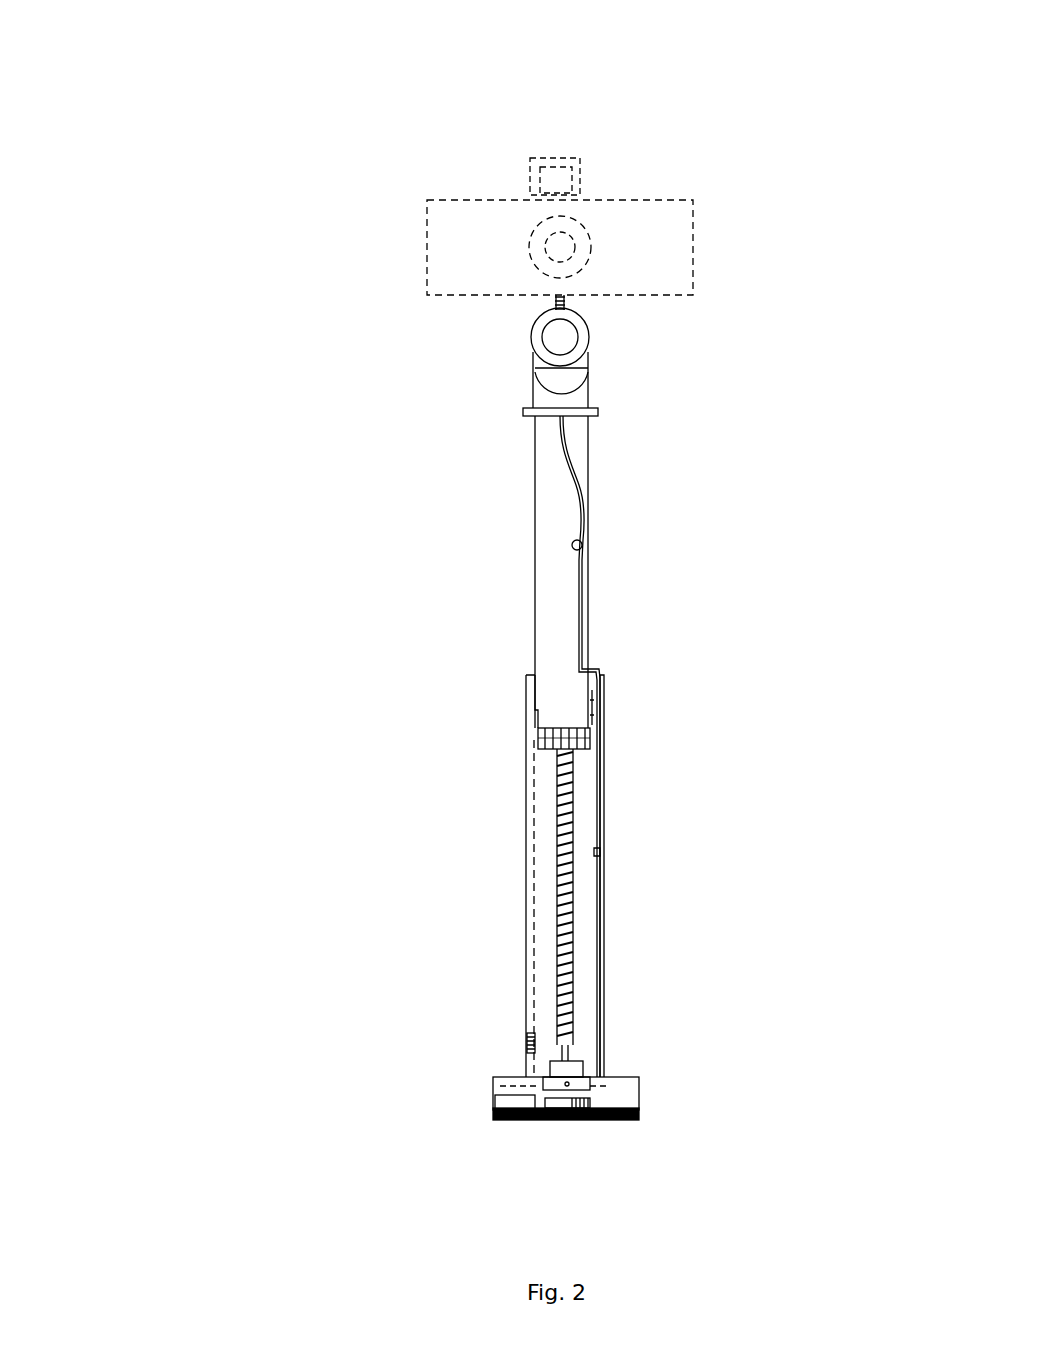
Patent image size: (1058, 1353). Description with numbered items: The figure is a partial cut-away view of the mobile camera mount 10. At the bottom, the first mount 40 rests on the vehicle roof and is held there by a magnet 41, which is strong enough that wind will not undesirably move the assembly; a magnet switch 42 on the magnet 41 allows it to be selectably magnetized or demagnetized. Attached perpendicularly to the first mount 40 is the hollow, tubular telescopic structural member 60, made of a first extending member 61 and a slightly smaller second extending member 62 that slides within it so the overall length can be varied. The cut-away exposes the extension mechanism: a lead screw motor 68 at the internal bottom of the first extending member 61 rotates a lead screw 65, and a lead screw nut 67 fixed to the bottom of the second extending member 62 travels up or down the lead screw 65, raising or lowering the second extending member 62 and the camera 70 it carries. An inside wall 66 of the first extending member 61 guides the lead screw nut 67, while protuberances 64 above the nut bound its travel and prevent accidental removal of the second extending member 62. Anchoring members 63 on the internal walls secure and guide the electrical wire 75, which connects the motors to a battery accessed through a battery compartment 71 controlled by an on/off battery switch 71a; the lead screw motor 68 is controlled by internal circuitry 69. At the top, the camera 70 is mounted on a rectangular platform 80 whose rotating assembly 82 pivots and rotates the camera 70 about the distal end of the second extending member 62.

The mobile camera mount 10 is at (162, 104).
The first mount 40 is at (497, 1083).
The magnet 41 is at (640, 1118).
The magnet switch 42 is at (585, 1102).
The structural member 60 is at (496, 818).
The first extending member 61 is at (604, 697).
The second extending member 62 is at (588, 458).
The anchoring members 63 is at (585, 543).
The protuberances 64 is at (537, 727).
The lead screw 65 is at (565, 900).
The inside wall 66 is at (533, 805).
The lead screw nut 67 is at (538, 736).
The lead screw motor 68 is at (563, 1068).
The internal circuitry 69 is at (500, 1103).
The camera 70 is at (578, 183).
The battery compartment 71 is at (590, 1077).
The battery switch 71a is at (527, 1035).
The electrical wire 75 is at (577, 563).
The platform 80 is at (597, 410).
The rotating assembly 82 is at (519, 340).